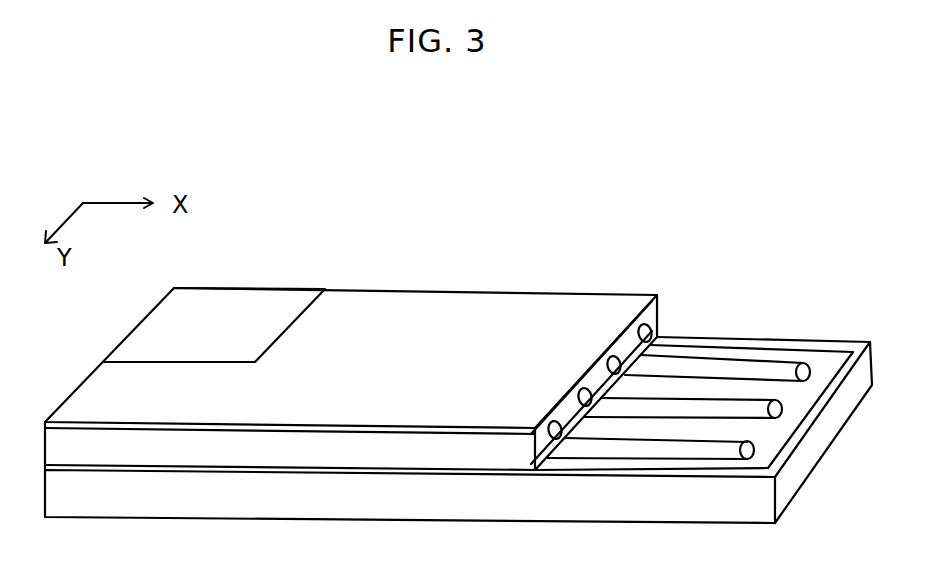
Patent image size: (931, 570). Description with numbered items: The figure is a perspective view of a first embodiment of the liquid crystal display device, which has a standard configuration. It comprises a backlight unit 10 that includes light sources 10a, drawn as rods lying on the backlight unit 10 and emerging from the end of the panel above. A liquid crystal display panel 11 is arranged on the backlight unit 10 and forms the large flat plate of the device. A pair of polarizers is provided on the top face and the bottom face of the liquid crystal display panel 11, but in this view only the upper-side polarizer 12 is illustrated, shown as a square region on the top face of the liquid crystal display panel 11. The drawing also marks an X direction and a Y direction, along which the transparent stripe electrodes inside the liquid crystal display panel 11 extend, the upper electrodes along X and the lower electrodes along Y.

The backlight unit 10 is at (716, 340).
The light sources 10a is at (722, 445).
The liquid crystal display panel 11 is at (542, 292).
The upper-side polarizer 12 is at (263, 303).